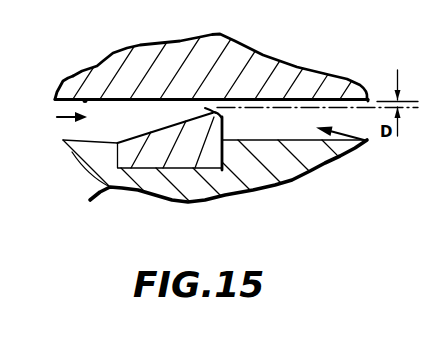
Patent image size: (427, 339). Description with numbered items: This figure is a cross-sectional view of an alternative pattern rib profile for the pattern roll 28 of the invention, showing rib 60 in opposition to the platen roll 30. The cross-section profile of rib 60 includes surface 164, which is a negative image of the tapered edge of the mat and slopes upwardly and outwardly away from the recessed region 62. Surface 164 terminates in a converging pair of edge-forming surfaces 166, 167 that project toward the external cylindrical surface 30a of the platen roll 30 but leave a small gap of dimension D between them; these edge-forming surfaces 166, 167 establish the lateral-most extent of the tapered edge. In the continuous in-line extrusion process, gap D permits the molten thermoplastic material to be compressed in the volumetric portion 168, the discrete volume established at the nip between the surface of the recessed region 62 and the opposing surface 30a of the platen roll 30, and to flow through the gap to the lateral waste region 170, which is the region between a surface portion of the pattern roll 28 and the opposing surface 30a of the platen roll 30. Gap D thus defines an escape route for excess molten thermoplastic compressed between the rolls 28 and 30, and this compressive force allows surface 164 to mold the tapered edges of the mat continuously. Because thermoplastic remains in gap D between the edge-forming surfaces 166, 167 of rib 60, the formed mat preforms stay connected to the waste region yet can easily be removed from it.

The platen roll 30 is at (314, 75).
The external cylindrical surface of platen roll 30a is at (85, 100).
The edge-forming surface 166 is at (208, 108).
The volumetric portion 168 is at (54, 117).
The surface 164 is at (140, 134).
The edge-forming surface 167 is at (232, 117).
The recessed region 62 is at (64, 140).
The rib 60 is at (110, 187).
The pattern roll 28 is at (321, 172).
The lateral waste region 170 is at (361, 141).